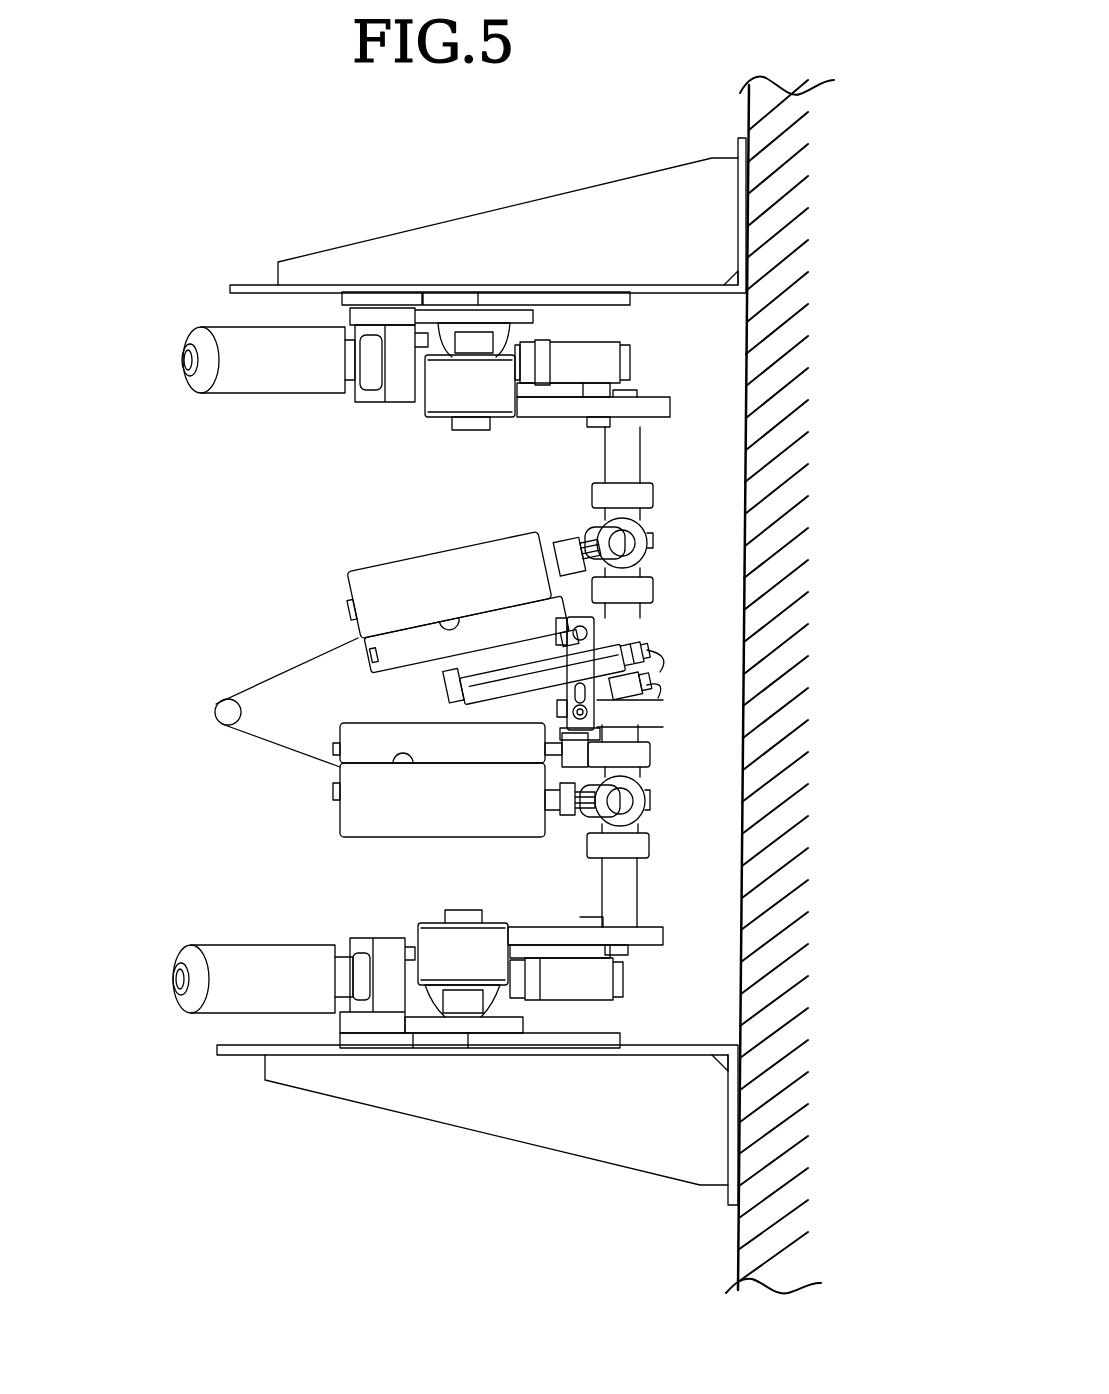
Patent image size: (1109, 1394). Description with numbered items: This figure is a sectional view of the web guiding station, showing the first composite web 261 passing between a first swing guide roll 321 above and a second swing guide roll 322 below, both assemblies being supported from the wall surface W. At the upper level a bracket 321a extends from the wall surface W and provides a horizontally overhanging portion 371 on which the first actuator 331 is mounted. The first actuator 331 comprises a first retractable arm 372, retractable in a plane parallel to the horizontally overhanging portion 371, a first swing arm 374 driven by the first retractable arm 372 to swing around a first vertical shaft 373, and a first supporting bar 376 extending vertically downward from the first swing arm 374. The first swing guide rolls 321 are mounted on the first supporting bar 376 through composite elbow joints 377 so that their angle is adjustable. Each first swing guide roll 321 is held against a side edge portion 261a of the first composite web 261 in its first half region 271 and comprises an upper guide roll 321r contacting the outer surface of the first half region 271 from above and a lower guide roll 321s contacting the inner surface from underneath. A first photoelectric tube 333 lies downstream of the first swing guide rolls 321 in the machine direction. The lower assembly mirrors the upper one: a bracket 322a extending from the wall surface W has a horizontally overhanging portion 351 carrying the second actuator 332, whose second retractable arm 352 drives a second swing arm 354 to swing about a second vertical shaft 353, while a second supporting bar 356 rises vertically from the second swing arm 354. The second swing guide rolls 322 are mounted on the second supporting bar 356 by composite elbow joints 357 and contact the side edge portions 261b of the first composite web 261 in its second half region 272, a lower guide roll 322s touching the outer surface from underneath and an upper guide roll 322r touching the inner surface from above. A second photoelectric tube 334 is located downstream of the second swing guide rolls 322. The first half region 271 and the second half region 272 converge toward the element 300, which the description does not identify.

The wall surface W is at (735, 1248).
The horizontally overhanging portion 371 is at (675, 300).
The bracket 321a is at (375, 262).
The first actuator 331 is at (236, 404).
The first vertical shaft 373 is at (465, 432).
The first retractable arm 372 is at (568, 355).
The first swing arm 374 is at (572, 413).
The first supporting bar 376 is at (630, 452).
The composite elbow joints 377 is at (630, 550).
The first swing guide roll 321 is at (431, 606).
The upper guide roll 321r is at (420, 570).
The lower guide roll 321s is at (397, 660).
The side edge portions 261a is at (448, 622).
The first composite web 261 is at (247, 709).
The first half region 271 is at (300, 660).
The second half region 272 is at (298, 757).
The pulley 300 is at (225, 716).
The first photoelectric tube 333 is at (495, 662).
The second photoelectric tube 334 is at (465, 700).
The second swing guide roll 322 is at (408, 793).
The upper guide roll 322r is at (360, 735).
The lower guide roll 322s is at (455, 823).
The side edge portions 261b is at (413, 767).
The composite elbow joints 357 is at (640, 757).
The second supporting bar 356 is at (632, 887).
The second vertical shaft 353 is at (458, 910).
The second swing arm 354 is at (553, 930).
The second retractable arm 352 is at (555, 985).
The second actuator 332 is at (214, 1025).
The horizontally overhanging portion 351 is at (655, 1045).
The bracket 322a is at (455, 1105).